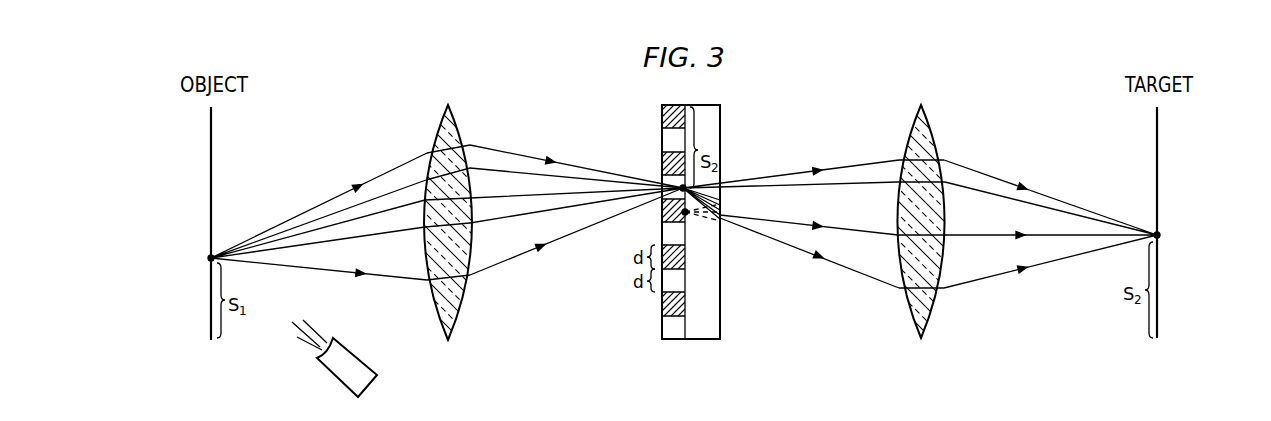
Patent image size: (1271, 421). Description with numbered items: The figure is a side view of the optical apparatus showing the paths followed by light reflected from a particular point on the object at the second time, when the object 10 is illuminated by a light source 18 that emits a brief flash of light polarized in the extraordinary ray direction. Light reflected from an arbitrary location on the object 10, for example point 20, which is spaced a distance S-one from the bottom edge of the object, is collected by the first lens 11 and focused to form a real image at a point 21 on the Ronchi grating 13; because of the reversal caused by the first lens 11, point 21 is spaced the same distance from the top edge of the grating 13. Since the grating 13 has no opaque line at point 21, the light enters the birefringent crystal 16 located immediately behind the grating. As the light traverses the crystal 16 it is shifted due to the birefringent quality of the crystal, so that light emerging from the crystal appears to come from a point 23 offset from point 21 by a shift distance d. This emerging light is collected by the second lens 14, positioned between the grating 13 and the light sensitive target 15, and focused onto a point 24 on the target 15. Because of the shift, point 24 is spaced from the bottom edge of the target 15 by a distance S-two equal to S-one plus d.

The object 10 is at (211, 143).
The first lens 11 is at (444, 116).
The Ronchi grating 13 is at (662, 305).
The second lens 14 is at (934, 124).
The light sensitive target 15 is at (1157, 160).
The birefringent crystal 16 is at (720, 300).
The light source 18 is at (334, 370).
The point 20 is at (209, 258).
The point 21 is at (688, 186).
The point 23 is at (690, 215).
The point 24 is at (1159, 235).